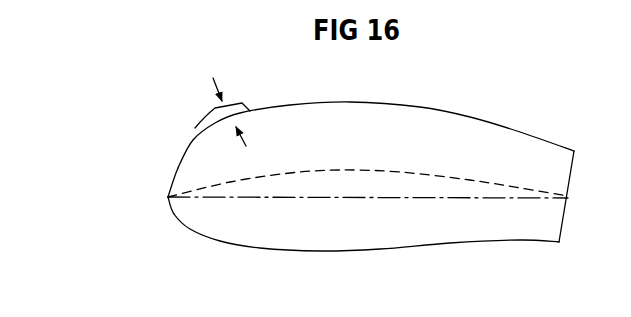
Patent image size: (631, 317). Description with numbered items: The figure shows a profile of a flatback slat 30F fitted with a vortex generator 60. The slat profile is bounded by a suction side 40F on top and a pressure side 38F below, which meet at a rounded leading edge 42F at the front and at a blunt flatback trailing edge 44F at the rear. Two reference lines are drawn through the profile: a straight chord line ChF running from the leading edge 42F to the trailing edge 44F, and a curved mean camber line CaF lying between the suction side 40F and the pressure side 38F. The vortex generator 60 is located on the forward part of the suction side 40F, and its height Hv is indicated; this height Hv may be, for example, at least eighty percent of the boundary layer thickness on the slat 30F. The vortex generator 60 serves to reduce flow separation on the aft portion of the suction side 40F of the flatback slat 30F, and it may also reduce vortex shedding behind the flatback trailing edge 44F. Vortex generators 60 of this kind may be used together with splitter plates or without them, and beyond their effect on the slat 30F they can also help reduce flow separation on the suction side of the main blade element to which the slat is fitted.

The flatback slat 30F is at (522, 96).
The suction side 40F is at (420, 107).
The pressure side 38F is at (380, 250).
The leading edge 42F is at (168, 197).
The trailing edge 44F is at (562, 221).
The mean camber line CaF is at (332, 169).
The chord line ChF is at (279, 198).
The vortex generator 60 is at (206, 121).
The height of the vortex generators Hv is at (221, 101).